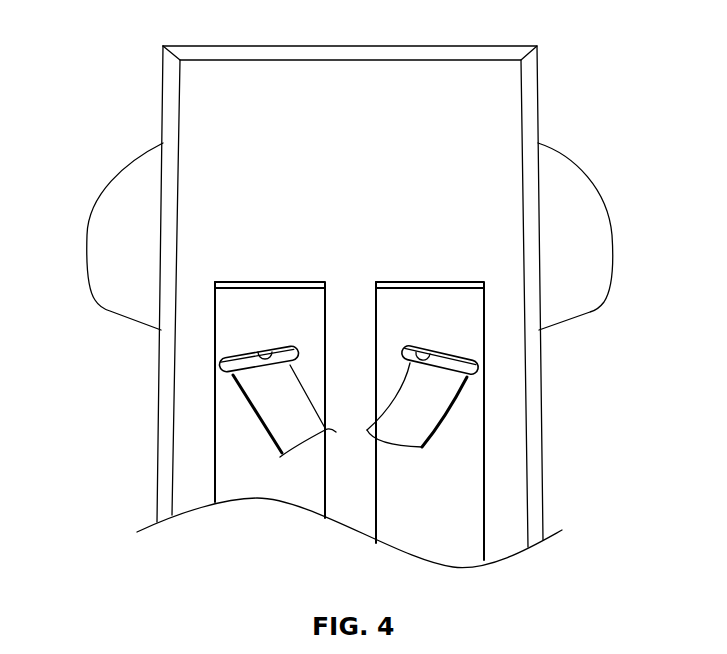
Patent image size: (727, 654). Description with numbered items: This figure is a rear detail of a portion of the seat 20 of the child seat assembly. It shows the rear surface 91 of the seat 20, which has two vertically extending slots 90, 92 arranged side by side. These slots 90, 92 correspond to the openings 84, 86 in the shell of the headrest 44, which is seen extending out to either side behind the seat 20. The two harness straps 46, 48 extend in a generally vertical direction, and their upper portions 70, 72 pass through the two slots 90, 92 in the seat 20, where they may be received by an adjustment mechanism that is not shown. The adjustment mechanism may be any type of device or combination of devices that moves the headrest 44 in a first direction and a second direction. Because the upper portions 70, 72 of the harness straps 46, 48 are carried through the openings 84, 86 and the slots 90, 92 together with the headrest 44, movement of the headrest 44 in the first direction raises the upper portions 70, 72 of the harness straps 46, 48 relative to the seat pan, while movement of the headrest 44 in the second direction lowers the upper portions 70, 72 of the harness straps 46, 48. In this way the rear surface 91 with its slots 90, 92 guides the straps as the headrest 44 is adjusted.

The seat 20 is at (247, 78).
The rear surface 91 is at (497, 123).
The headrest 44 is at (113, 207).
The harness strap 48 is at (317, 440).
The slot 92 is at (320, 322).
The harness strap 46 is at (418, 447).
The slot 90 is at (377, 317).
The upper portion 72 is at (282, 432).
The opening 86 is at (270, 347).
The upper portion 70 is at (513, 440).
The opening 84 is at (420, 347).